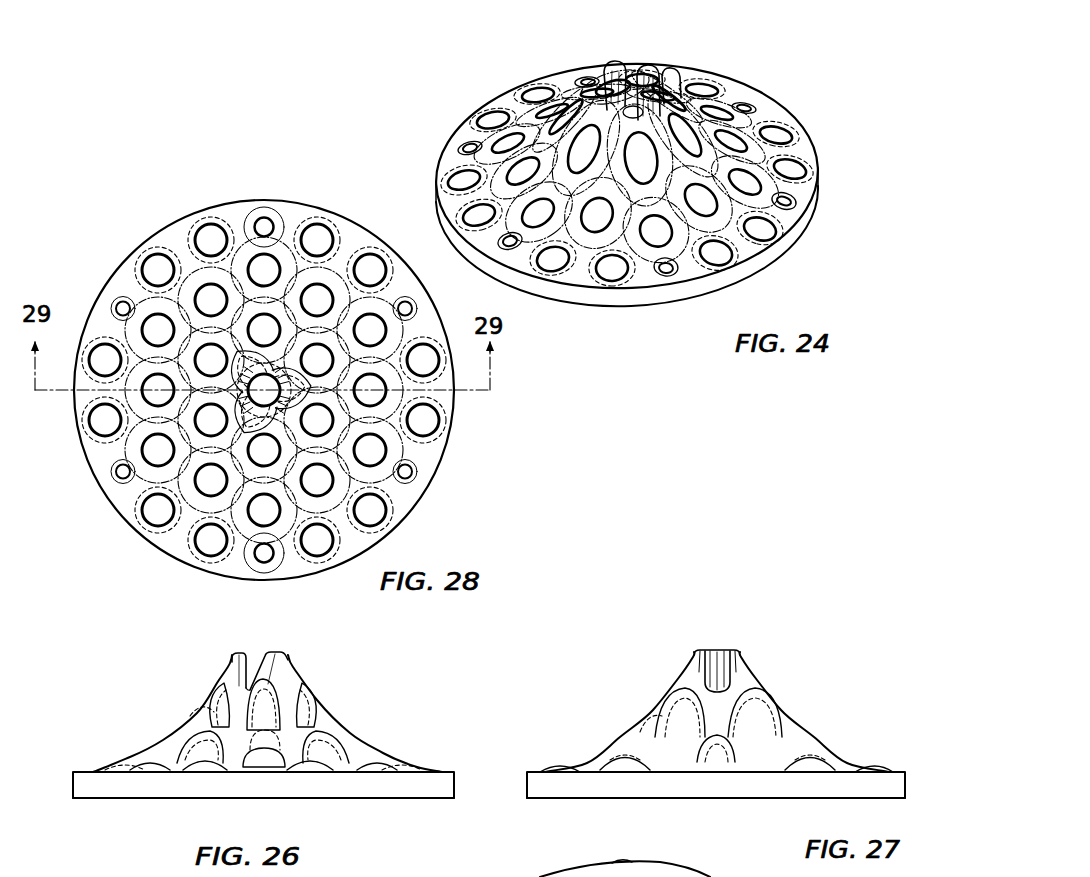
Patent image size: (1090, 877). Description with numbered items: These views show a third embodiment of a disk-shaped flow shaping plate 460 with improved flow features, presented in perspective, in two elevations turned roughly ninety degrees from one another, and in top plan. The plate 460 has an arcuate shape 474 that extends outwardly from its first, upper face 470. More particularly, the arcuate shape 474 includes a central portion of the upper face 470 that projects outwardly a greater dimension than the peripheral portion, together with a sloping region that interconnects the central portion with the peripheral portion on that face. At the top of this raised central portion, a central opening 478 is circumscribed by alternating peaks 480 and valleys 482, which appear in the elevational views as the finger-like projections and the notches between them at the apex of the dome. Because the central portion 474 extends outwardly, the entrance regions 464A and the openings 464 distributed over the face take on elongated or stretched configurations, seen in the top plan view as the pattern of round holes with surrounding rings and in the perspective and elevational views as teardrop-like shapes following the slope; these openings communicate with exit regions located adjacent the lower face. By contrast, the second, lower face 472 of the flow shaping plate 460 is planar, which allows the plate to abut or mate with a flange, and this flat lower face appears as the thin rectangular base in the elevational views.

In FIG. 28, the flow shaping plate 460 is at (105, 517).
In FIG. 24, the flow shaping plate 460 is at (807, 220).
In FIG. 26, the flow shaping plate 460 is at (72, 787).
In FIG. 27, the flow shaping plate 460 is at (902, 790).
In FIG. 28, the openings 464 is at (428, 364).
In FIG. 24, the openings 464 is at (532, 102).
In FIG. 26, the openings 464 is at (268, 710).
In FIG. 27, the openings 464 is at (693, 708).
In FIG. 28, the entrance regions 464A is at (152, 252).
In FIG. 24, the entrance regions 464A is at (470, 208).
In FIG. 26, the entrance regions 464A is at (205, 714).
In FIG. 27, the entrance regions 464A is at (667, 717).
In FIG. 28, the first, upper face 470 is at (409, 500).
In FIG. 24, the first, upper face 470 is at (757, 252).
In FIG. 26, the first, upper face 470 is at (443, 772).
In FIG. 27, the first, upper face 470 is at (543, 772).
In FIG. 26, the second, lower face 472 is at (413, 800).
In FIG. 27, the second, lower face 472 is at (563, 800).
In FIG. 26, the arcuate shape 474 is at (343, 722).
In FIG. 27, the arcuate shape 474 is at (795, 723).
In FIG. 28, the central opening 478 is at (264, 362).
In FIG. 24, the peaks 480 is at (617, 62).
In FIG. 26, the peaks 480 is at (233, 652).
In FIG. 27, the peaks 480 is at (697, 655).
In FIG. 24, the valleys 482 is at (588, 94).
In FIG. 26, the valleys 482 is at (250, 688).
In FIG. 27, the valleys 482 is at (718, 690).